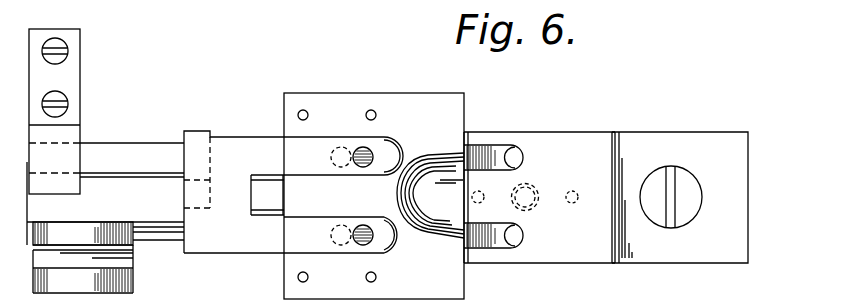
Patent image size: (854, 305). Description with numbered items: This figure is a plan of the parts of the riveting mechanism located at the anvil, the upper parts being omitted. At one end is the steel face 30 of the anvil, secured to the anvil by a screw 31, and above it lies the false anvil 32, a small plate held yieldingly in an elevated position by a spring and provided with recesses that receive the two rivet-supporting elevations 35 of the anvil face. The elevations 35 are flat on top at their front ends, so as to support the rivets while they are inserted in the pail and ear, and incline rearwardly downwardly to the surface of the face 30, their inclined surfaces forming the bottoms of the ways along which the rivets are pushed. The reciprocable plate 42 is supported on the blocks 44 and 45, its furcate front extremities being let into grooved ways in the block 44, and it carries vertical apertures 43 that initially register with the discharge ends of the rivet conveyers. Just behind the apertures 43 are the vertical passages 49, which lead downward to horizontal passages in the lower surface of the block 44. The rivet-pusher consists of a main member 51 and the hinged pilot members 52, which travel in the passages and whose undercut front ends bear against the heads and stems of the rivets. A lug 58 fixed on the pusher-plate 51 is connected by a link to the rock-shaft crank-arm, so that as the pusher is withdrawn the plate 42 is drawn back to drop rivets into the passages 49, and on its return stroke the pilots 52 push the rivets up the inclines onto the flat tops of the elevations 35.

The steel face 30 is at (680, 197).
The screw 31 is at (671, 197).
The false anvil 32 is at (597, 134).
The rivet-supporting elevations 35 is at (513, 160).
The reciprocable plate 42 is at (230, 145).
The vertical apertures 43 is at (370, 152).
The block 44 is at (427, 100).
The block 45 is at (73, 117).
The vertical passages 49 is at (341, 147).
The main member 51 is at (105, 194).
The pilot members 52 is at (499, 151).
The lug 58 is at (134, 282).